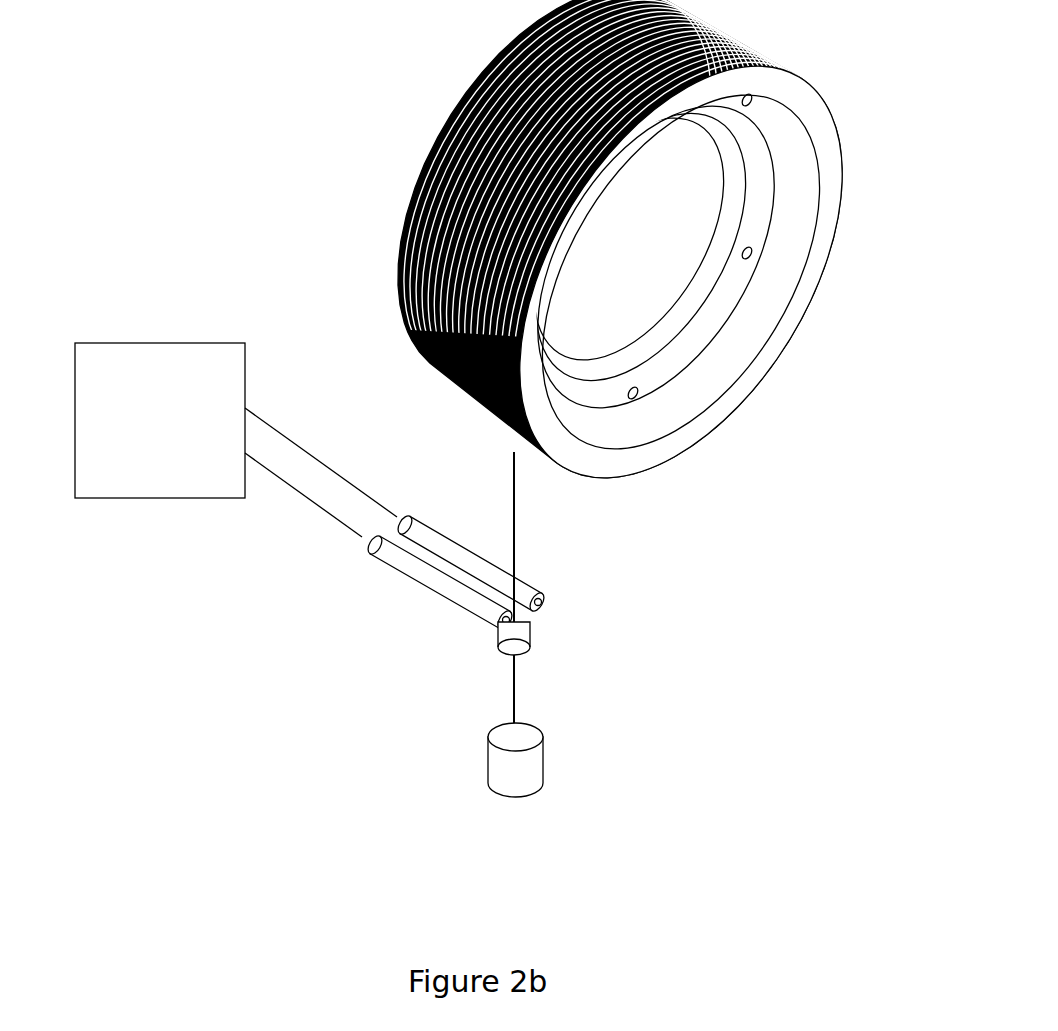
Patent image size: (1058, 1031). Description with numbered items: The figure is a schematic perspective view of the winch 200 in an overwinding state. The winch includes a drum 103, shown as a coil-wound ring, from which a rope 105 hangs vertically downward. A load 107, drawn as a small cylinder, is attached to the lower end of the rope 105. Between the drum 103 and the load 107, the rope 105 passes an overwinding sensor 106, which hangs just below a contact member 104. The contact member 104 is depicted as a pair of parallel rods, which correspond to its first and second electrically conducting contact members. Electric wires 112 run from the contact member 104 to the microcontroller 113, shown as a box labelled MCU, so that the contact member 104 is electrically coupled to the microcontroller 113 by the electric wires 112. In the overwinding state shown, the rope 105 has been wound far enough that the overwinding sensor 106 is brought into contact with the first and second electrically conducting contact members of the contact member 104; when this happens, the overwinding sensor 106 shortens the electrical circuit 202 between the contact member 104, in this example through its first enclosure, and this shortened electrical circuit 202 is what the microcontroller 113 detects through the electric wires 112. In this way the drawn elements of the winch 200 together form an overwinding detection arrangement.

The drum 103 is at (846, 243).
The contact member 104 is at (357, 559).
The rope 105 is at (533, 510).
The overwinding sensor 106 is at (545, 630).
The load 107 is at (559, 770).
The electric wires 112 is at (332, 442).
The microcontroller 113 is at (168, 313).
The winch 200 is at (249, 831).
The electrical circuit 202 is at (200, 641).